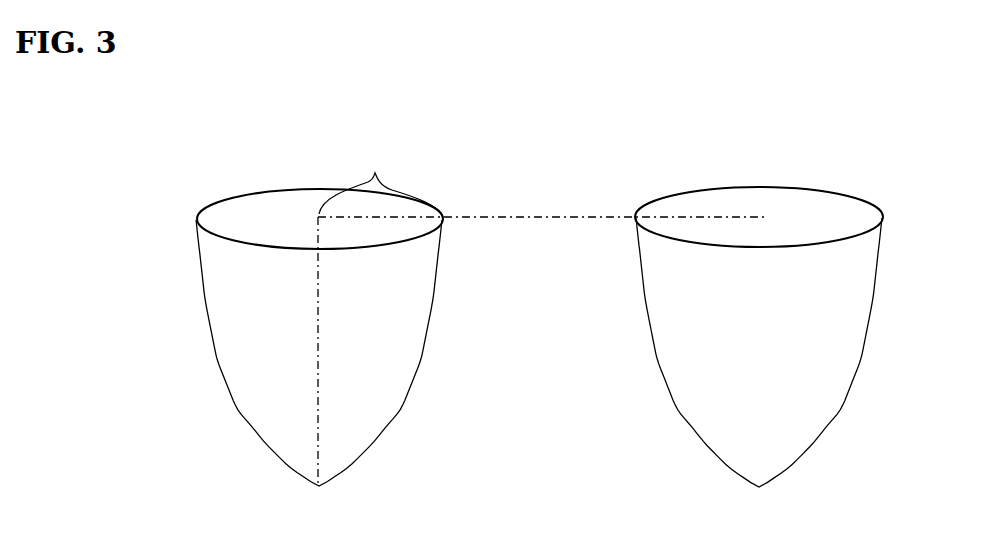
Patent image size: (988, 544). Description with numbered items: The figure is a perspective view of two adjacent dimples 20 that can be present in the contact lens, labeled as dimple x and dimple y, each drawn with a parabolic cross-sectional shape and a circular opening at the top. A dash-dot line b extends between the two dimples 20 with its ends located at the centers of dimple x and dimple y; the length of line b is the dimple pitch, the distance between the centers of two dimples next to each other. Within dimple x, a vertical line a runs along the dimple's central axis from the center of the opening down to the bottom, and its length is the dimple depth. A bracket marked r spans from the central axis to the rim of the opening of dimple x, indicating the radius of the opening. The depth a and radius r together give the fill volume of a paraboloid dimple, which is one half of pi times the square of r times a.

The dimple 20 is at (252, 207).
The first dimple x is at (319, 353).
The second dimple y is at (759, 352).
The dimple depth line a is at (307, 351).
The pitch line b is at (541, 200).
The dimple opening radius r is at (381, 178).